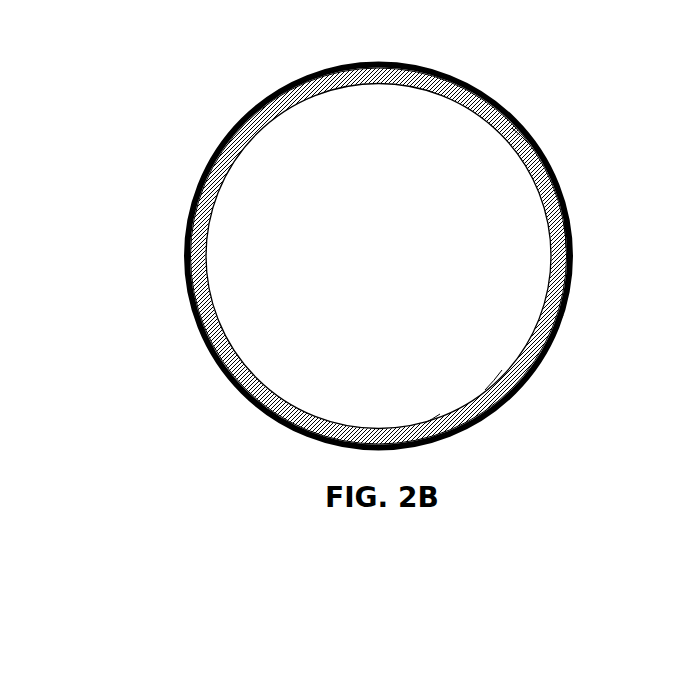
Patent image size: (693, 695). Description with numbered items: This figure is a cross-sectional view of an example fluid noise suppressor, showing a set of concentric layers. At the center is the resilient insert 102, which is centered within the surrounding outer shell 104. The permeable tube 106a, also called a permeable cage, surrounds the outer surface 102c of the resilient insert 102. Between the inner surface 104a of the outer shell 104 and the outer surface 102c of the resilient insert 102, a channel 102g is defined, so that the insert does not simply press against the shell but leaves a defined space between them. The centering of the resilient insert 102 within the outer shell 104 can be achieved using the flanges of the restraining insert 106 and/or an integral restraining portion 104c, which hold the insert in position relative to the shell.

The resilient insert 102 is at (234, 210).
The outer shell 104 is at (487, 89).
The restraining insert 106 is at (200, 284).
The permeable tube 106a is at (532, 177).
The channel 102g is at (565, 235).
The inner surface of the outer shell 104a is at (557, 327).
The outer surface of the resilient insert 102c is at (495, 381).
The integral restraining portion 104c is at (432, 420).